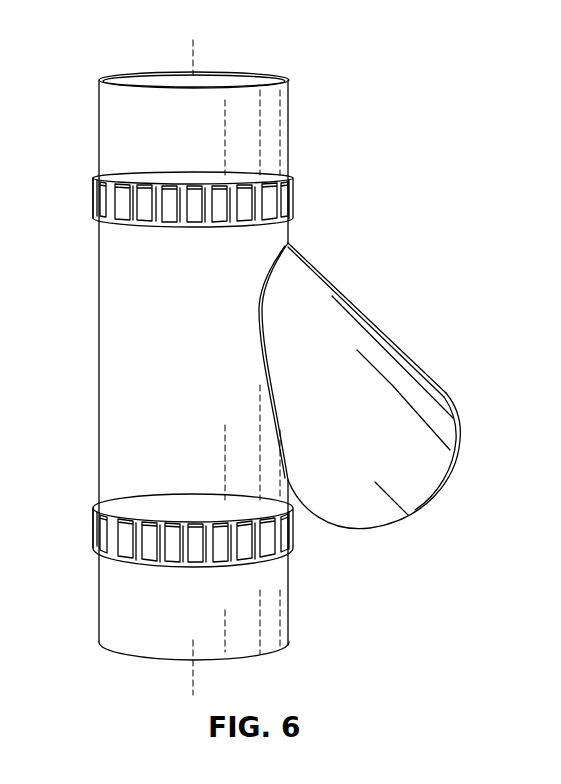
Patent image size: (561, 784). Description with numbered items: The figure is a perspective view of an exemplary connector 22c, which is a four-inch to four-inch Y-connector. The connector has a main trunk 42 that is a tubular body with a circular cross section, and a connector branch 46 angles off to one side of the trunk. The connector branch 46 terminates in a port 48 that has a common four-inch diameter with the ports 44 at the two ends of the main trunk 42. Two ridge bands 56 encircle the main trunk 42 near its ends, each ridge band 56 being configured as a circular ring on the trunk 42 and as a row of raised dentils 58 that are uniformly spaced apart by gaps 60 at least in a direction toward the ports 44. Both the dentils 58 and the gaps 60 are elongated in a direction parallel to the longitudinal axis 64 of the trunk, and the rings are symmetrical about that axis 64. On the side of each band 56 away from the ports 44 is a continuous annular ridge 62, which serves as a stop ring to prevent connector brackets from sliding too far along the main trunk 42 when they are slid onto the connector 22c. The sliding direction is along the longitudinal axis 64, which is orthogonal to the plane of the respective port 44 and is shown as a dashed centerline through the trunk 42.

The connector 22c is at (382, 46).
The main trunk 42 is at (108, 362).
The ports 44 is at (215, 73).
The connector branch 46 is at (365, 315).
The port 48 is at (430, 500).
The ridge band 56 is at (290, 208).
The dentils 58 is at (163, 190).
The gaps 60 is at (155, 186).
The continuous annular ridge 62 is at (100, 225).
The longitudinal axis 64 is at (192, 60).